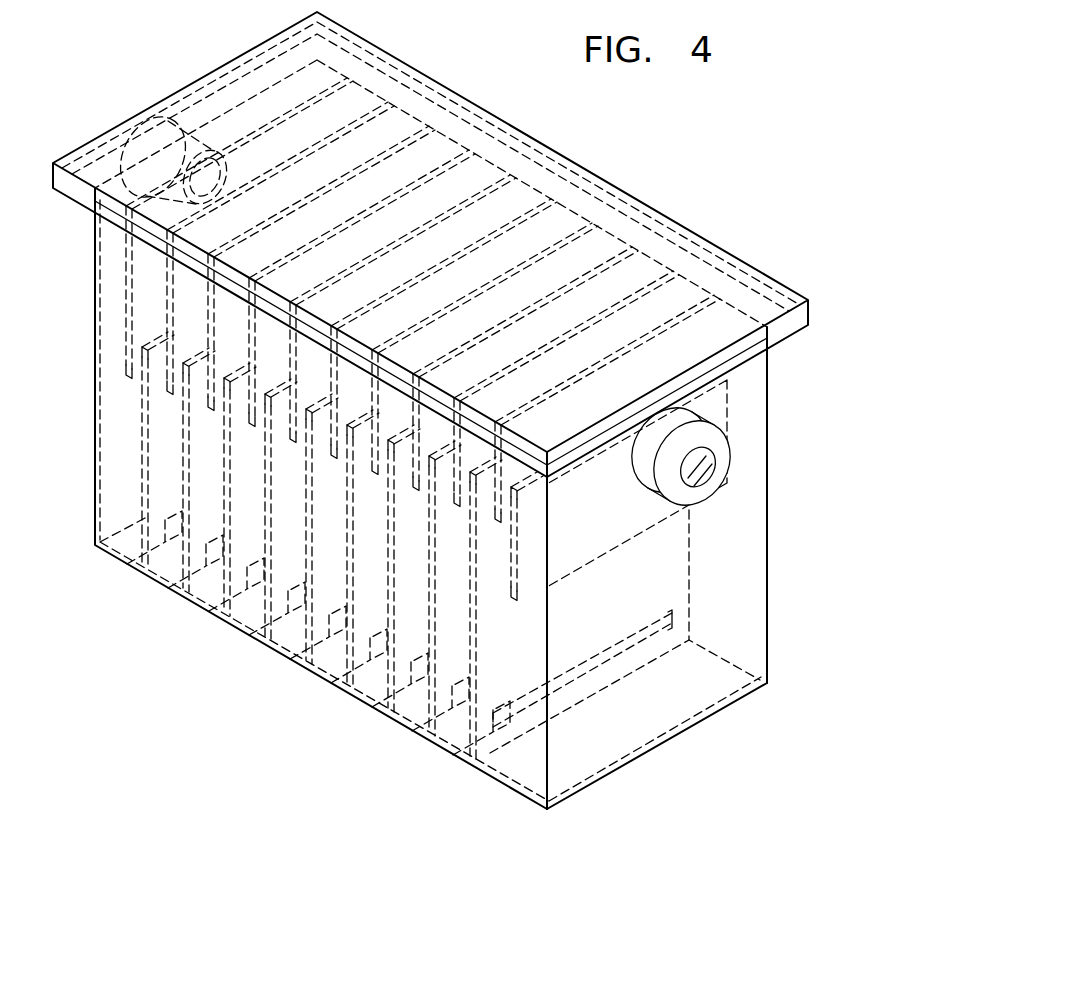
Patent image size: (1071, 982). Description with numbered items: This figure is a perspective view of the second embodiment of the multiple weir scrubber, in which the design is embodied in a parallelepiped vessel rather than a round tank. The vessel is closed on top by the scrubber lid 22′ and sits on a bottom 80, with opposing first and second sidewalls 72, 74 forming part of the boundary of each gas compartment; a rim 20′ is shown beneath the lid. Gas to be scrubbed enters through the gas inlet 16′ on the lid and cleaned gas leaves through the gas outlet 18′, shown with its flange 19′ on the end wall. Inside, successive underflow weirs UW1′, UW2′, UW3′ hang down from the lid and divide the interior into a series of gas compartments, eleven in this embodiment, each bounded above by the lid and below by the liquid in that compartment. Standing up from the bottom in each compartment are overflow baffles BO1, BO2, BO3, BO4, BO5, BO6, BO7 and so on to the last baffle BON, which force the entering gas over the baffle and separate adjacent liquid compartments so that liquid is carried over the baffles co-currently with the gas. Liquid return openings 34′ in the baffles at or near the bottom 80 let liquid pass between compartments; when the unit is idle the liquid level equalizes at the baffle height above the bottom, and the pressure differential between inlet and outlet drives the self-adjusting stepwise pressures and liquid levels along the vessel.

The gas inlet 16′ is at (125, 152).
The scrubber lid 22′ is at (776, 290).
The housing rim 20′ is at (793, 335).
The first underflow weir UW1′ is at (130, 340).
The second underflow weir UW2′ is at (172, 308).
The third underflow weir UW3′ is at (213, 285).
The first sidewall 72 is at (110, 437).
The second sidewall 74 is at (770, 547).
The bottom 80 is at (727, 685).
The liquid return openings 34′ is at (622, 647).
The gas outlet 18′ is at (653, 457).
The flange 19′ is at (706, 456).
The first overflow baffle BO1 is at (148, 508).
The second overflow baffle BO2 is at (183, 568).
The third overflow baffle BO3 is at (223, 600).
The fourth overflow baffle BO4 is at (270, 620).
The fifth overflow baffle BO5 is at (307, 643).
The sixth overflow baffle BO6 is at (347, 680).
The seventh overflow baffle BO7 is at (385, 712).
The Nth overflow baffle BON is at (483, 738).